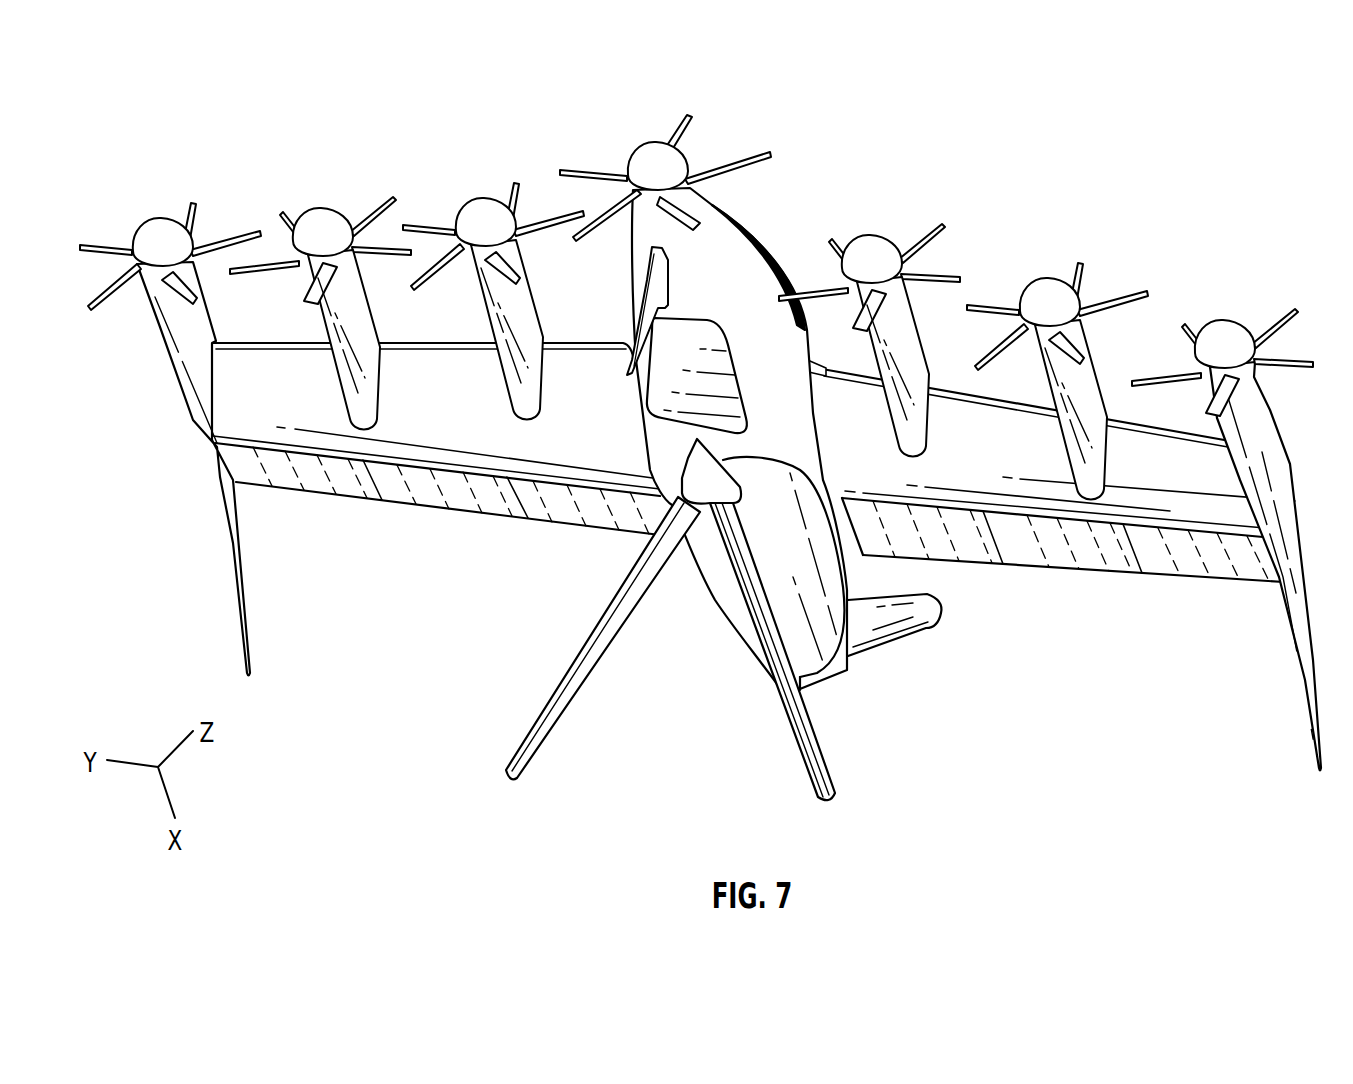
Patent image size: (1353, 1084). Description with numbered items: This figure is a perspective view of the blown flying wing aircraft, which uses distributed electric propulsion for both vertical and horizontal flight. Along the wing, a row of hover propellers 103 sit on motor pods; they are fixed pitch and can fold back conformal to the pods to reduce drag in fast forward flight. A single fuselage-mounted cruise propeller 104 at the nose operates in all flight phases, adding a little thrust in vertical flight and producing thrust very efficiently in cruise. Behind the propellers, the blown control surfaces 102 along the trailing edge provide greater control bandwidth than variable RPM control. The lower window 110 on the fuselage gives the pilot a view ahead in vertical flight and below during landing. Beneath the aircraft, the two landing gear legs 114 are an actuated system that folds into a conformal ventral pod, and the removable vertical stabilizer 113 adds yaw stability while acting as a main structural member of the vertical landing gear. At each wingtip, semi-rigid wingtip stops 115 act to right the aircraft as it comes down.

The blown control surfaces 102 is at (321, 520).
The hover propellers 103 is at (172, 235).
The fuselage-mounted cruise propeller 104 is at (656, 153).
The lower window or belly window 110 is at (656, 363).
The vertical stabilizer 113 is at (880, 663).
The landing gear legs 114 is at (527, 748).
The wingtip stops 115 is at (238, 612).